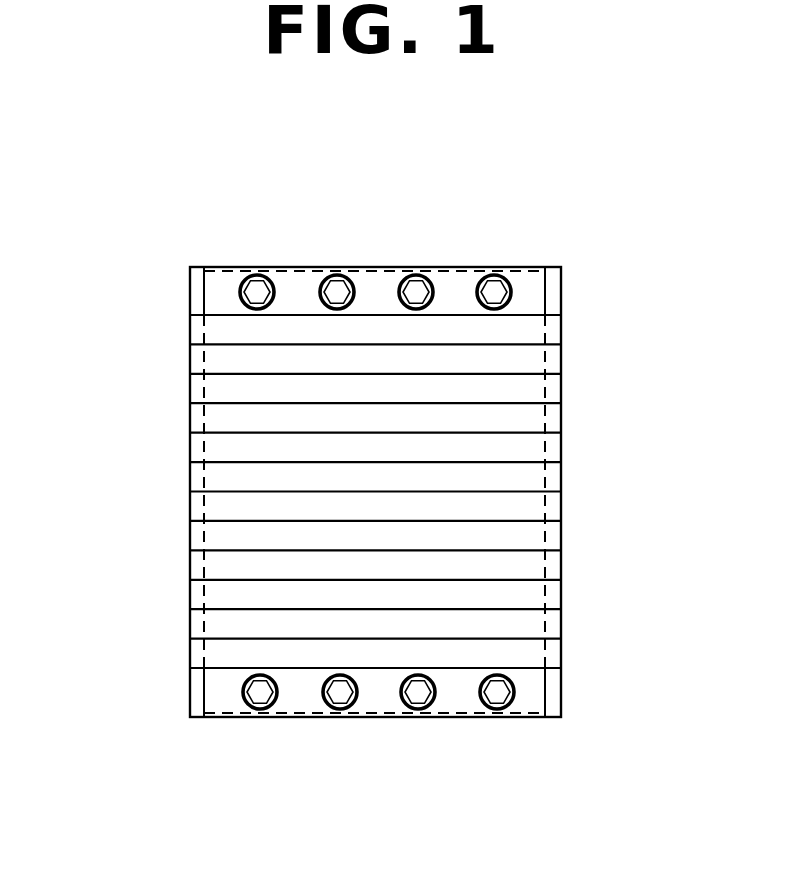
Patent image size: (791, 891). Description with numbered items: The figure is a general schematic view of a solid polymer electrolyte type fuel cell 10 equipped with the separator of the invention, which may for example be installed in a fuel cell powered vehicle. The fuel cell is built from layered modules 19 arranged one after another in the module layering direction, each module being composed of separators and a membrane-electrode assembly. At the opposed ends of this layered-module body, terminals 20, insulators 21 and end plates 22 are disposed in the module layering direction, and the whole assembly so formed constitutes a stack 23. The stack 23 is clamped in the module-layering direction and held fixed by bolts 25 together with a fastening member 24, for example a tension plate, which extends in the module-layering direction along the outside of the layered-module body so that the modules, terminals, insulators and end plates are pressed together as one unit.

The fuel cell 10 is at (524, 265).
The layered modules 19 is at (193, 594).
The terminals 20 is at (193, 363).
The insulators 21 is at (195, 333).
The end plates 22 is at (195, 277).
The stack 23 is at (593, 265).
The fastening member 24 is at (205, 657).
The bolts 25 is at (258, 286).